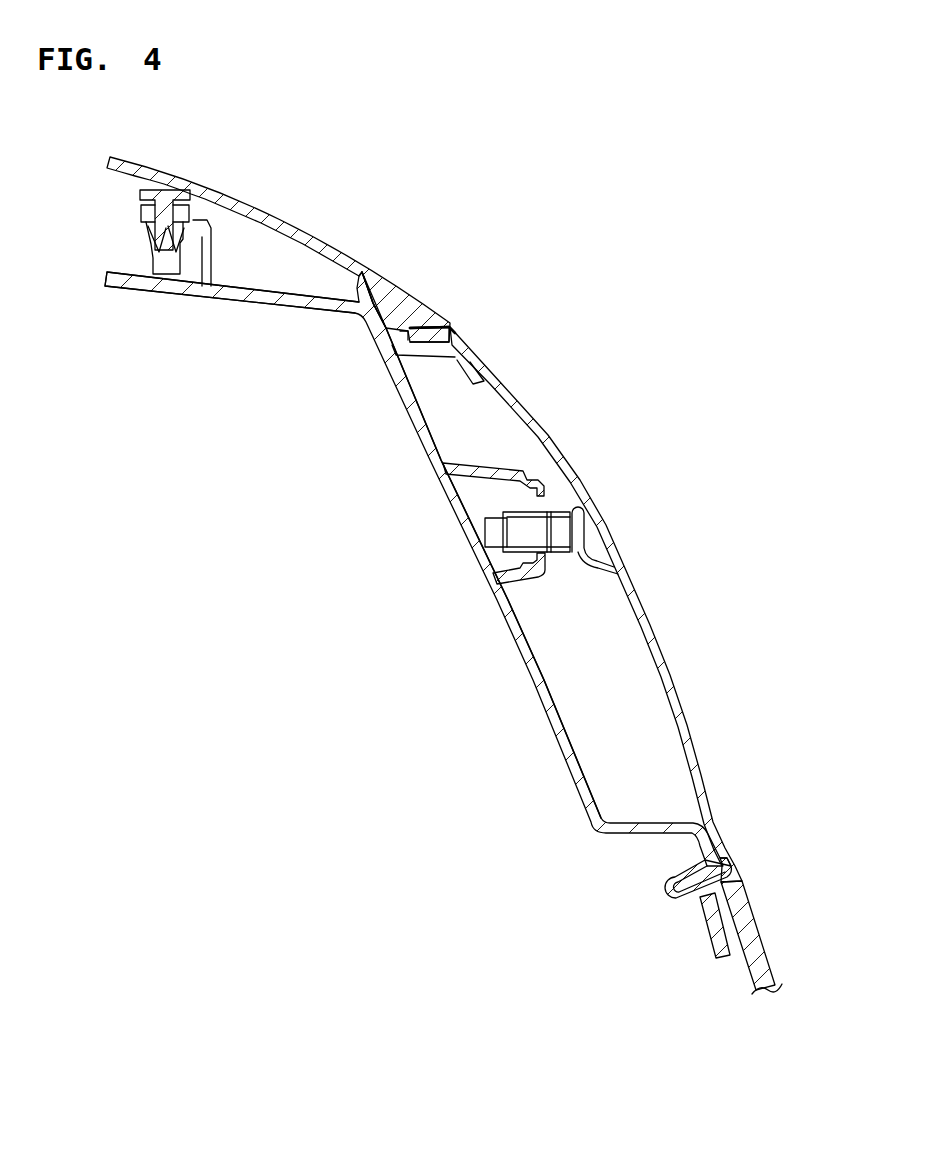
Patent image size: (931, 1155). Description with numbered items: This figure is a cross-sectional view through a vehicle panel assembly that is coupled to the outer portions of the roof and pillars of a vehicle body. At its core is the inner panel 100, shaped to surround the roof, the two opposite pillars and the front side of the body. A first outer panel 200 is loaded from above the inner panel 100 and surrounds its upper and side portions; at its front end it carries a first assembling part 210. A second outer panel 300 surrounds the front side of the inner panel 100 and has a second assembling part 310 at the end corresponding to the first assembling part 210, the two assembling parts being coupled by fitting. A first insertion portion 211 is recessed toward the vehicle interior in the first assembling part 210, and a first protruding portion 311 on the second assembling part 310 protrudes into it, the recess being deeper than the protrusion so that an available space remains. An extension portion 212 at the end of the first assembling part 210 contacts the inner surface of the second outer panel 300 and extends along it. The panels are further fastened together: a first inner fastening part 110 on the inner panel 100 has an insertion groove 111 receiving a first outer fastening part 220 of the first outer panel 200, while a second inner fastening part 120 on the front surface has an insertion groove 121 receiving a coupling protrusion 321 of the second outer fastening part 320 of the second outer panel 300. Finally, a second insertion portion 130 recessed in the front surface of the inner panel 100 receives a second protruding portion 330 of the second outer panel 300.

The inner panel 100 is at (442, 516).
The first inner fastening part 110 is at (206, 258).
The insertion groove 111 is at (182, 190).
The second inner fastening part 120 is at (533, 576).
The insertion groove 121 is at (543, 504).
The second insertion portion 130 is at (669, 895).
The first outer panel 200 is at (312, 212).
The first assembling part 210 is at (422, 285).
The first insertion portion 211 is at (405, 336).
The extension portion 212 is at (467, 373).
The first outer fastening part 220 is at (145, 238).
The second outer panel 300 is at (682, 663).
The second assembling part 310 is at (462, 318).
The first protruding portion 311 is at (430, 348).
The second outer fastening part 320 is at (568, 530).
The coupling protrusion 321 is at (552, 556).
The second protruding portion 330 is at (725, 873).